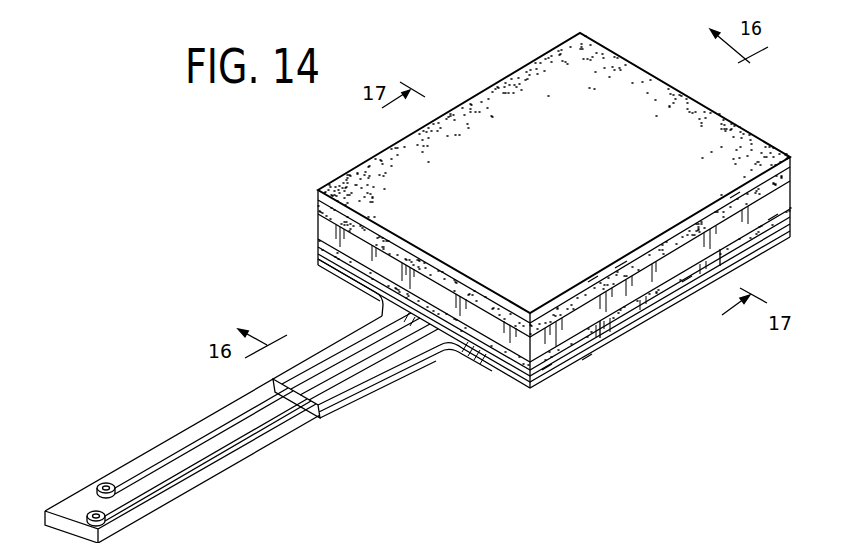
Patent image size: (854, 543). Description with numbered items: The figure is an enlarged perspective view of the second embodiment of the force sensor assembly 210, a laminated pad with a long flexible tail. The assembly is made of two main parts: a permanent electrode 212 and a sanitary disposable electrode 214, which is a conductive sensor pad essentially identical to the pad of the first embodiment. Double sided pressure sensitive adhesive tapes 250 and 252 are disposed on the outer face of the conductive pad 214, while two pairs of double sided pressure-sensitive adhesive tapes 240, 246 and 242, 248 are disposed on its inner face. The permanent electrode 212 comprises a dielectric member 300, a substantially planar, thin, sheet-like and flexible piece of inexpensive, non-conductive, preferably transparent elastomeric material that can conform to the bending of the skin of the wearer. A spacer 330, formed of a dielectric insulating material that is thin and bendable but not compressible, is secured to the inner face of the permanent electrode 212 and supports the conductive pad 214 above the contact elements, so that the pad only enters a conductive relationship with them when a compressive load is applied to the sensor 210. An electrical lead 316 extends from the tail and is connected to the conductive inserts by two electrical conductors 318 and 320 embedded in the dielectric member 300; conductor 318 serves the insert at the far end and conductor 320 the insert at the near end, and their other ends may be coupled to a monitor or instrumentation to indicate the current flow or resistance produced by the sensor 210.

The force sensor assembly 210 is at (376, 149).
The permanent electrode 212 is at (313, 240).
The disposable electrode 214 is at (313, 197).
The double sided pressure-sensitive adhesive tape 240 is at (587, 357).
The double sided pressure-sensitive adhesive tape 242 is at (773, 222).
The double sided pressure-sensitive adhesive tape 246 is at (547, 370).
The double sided pressure-sensitive adhesive tape 248 is at (735, 195).
The double sided pressure sensitive adhesive tape 250 is at (620, 263).
The double sided pressure sensitive adhesive tape 252 is at (593, 278).
The dielectric member 300 is at (504, 384).
The electrical lead 316 is at (85, 503).
The electrical conductor 318 is at (127, 480).
The electrical conductor 320 is at (167, 486).
The spacer 330 is at (687, 280).